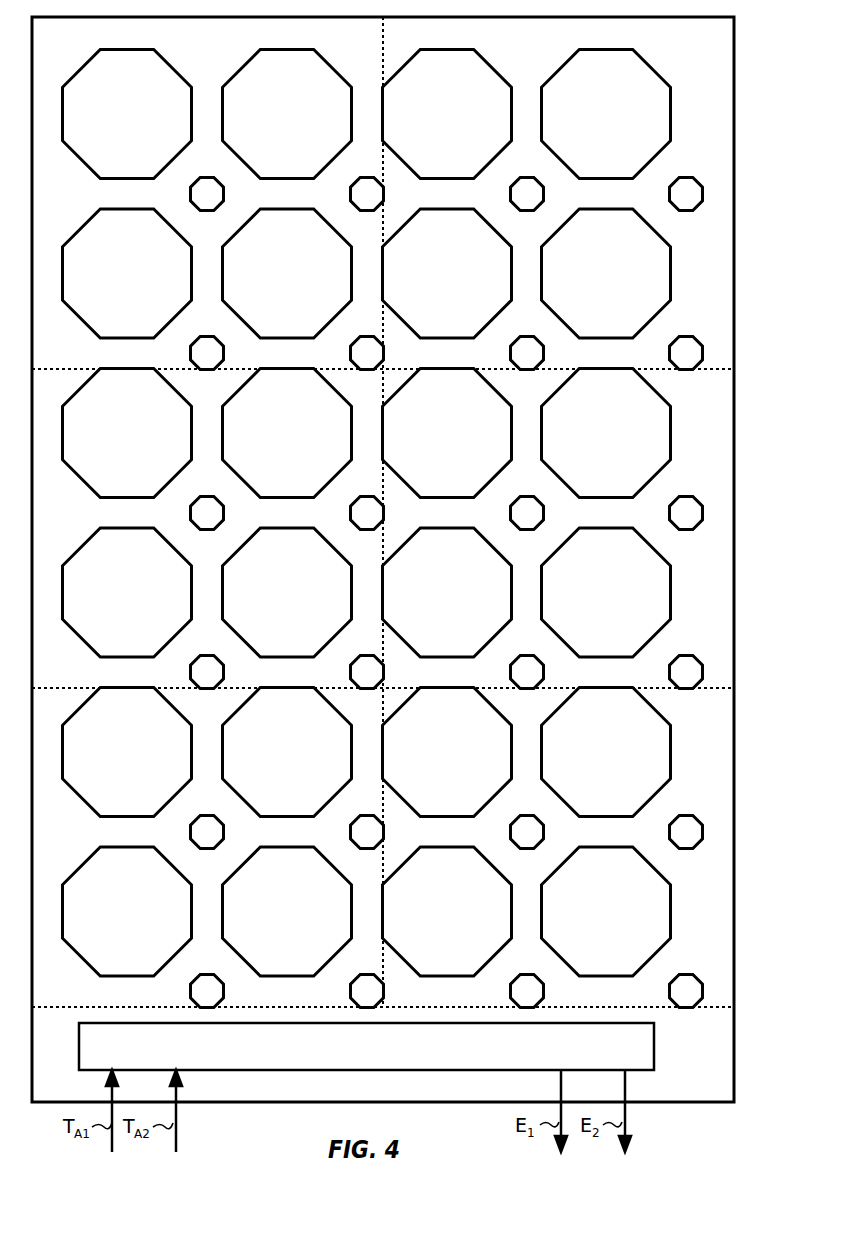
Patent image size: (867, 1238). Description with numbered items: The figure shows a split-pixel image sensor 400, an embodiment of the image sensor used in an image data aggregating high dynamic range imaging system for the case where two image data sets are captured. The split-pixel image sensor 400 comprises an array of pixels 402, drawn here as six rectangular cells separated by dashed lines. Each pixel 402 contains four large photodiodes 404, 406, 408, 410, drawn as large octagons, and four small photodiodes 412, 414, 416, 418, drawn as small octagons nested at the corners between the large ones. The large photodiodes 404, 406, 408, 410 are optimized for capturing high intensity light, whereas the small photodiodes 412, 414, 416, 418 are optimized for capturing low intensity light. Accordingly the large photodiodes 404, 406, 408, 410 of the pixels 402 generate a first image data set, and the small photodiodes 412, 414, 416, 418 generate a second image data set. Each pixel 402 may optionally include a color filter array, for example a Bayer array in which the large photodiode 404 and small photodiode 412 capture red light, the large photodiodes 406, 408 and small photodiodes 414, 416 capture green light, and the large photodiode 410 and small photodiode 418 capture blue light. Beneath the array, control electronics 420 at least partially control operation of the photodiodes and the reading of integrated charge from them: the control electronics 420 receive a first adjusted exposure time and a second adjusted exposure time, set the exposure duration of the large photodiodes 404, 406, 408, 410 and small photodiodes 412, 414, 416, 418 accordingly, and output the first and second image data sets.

The split-pixel image sensor 400 is at (734, 98).
The pixel 402 is at (78, 358).
The large photodiode 404 is at (272, 283).
The large photodiode 406 is at (112, 283).
The large photodiode 408 is at (272, 124).
The large photodiode 410 is at (112, 124).
The small photodiode 412 is at (504, 672).
The small photodiode 414 is at (504, 513).
The small photodiode 416 is at (345, 672).
The small photodiode 418 is at (345, 513).
The control electronics 420 is at (647, 1058).